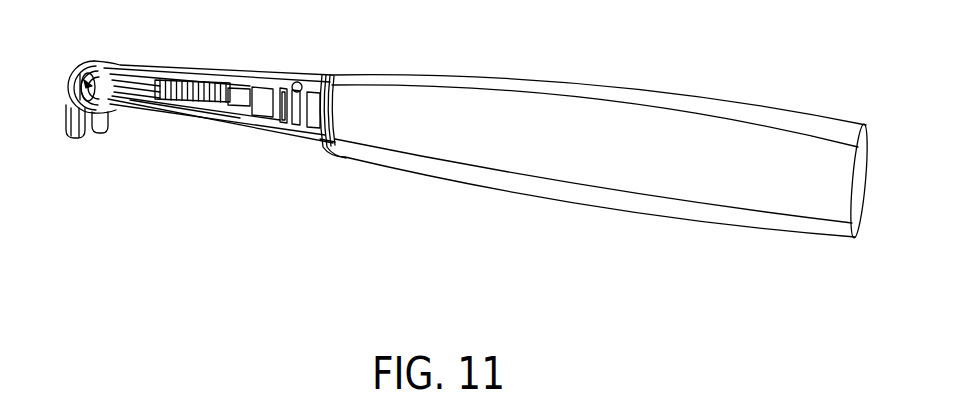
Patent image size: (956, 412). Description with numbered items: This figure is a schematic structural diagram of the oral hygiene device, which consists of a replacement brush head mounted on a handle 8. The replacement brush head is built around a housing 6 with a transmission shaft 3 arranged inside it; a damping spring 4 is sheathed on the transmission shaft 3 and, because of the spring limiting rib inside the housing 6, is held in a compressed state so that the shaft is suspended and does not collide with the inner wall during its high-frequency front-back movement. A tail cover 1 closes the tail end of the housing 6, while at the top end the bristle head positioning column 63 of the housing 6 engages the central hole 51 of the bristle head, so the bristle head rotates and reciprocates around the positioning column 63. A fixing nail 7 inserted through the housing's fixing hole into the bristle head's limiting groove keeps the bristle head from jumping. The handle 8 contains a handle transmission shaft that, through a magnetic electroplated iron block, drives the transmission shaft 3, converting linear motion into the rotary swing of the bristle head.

The tail cover 1 is at (323, 143).
The transmission shaft 3 is at (238, 96).
The damping spring 4 is at (201, 79).
The housing 6 is at (185, 64).
The fixing nail 7 is at (90, 90).
The handle 8 is at (341, 82).
The central hole 51 is at (108, 115).
The bristle head positioning column 63 is at (83, 62).